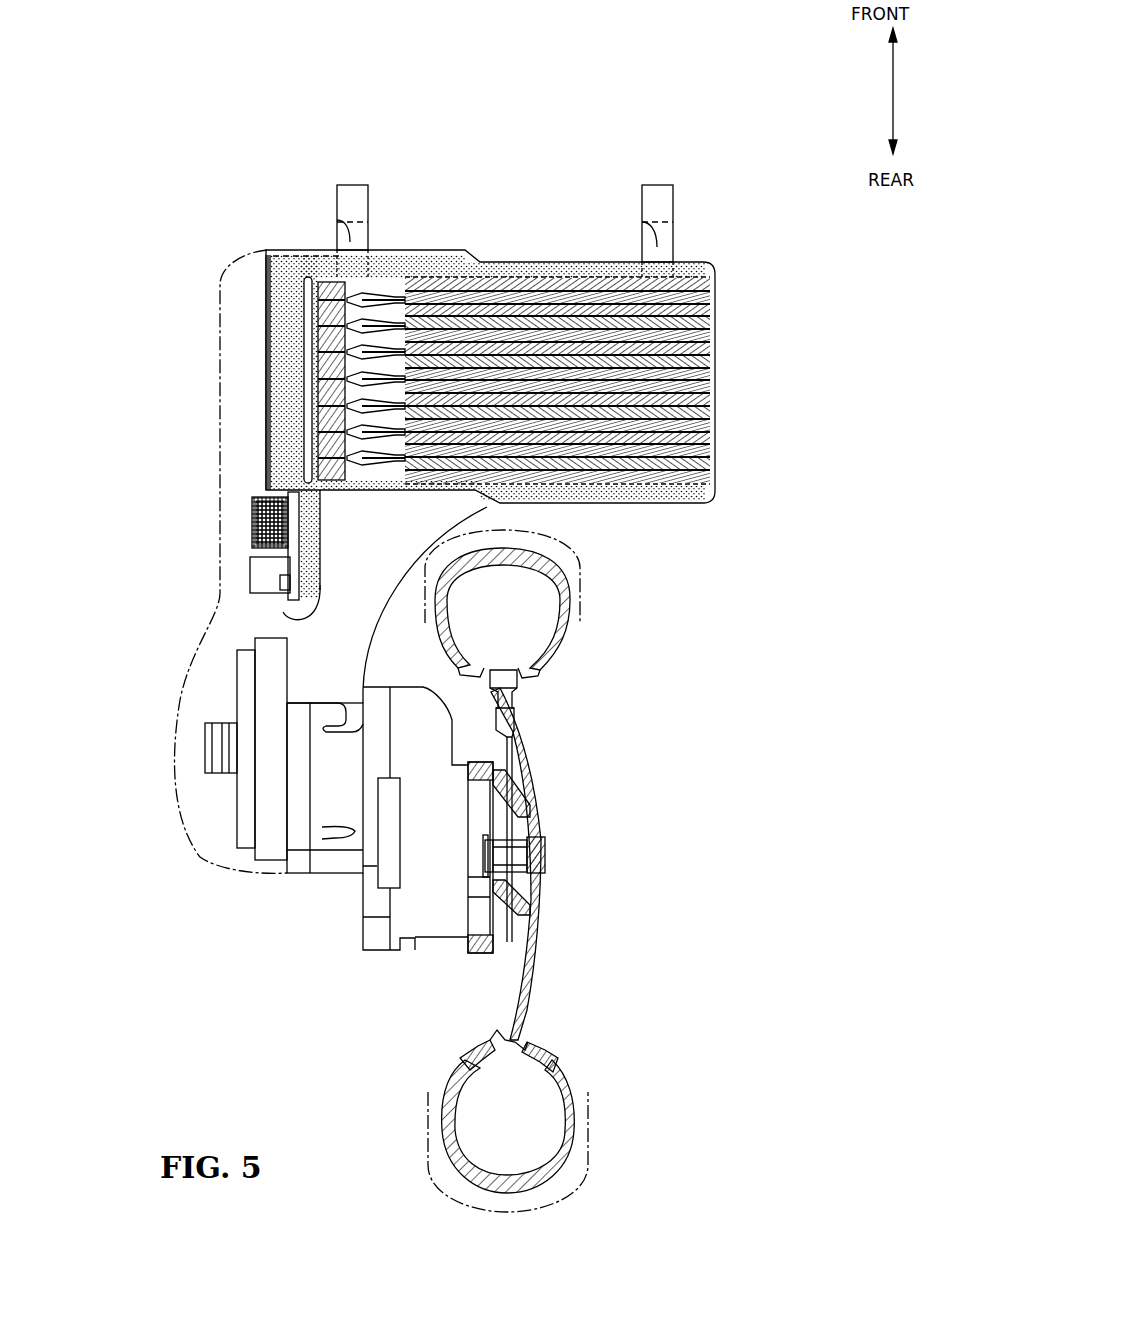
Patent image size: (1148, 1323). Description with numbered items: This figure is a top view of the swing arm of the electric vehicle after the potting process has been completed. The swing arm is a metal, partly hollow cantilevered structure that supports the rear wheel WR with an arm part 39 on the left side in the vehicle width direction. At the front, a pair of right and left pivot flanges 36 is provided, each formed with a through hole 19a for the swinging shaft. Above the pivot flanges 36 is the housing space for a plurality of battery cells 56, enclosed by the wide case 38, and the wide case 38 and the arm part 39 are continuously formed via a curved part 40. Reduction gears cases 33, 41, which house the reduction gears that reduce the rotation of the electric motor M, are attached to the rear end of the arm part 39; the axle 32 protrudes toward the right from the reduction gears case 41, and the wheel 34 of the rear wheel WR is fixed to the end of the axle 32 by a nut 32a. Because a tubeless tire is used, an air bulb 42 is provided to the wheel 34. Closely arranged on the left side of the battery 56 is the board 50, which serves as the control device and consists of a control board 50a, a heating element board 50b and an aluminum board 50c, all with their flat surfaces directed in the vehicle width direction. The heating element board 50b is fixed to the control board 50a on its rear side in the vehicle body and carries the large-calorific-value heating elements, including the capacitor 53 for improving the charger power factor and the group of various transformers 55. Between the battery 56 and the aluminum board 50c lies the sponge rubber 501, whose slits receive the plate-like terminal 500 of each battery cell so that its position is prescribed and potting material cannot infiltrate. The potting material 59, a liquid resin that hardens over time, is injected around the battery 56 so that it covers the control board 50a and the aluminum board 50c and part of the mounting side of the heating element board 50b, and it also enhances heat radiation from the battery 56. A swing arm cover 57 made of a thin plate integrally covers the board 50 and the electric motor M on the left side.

The wide case 38 is at (513, 262).
The pivot flange 36 is at (337, 192).
The through hole 19a is at (337, 242).
The battery cells 56 is at (706, 400).
The board 50 is at (258, 433).
The control board 50a is at (268, 345).
The aluminum board 50c is at (268, 372).
The potting material 59 is at (300, 300).
The sponge rubber 501 is at (306, 312).
The plate-like terminal 500 is at (335, 330).
The heating element board 50b is at (283, 619).
The capacitor 53 is at (252, 505).
The group of various transformers 55 is at (252, 576).
The swing arm cover 57 is at (176, 792).
The electric motor M is at (217, 823).
The arm part 39 is at (320, 648).
The reduction gears case 33 is at (365, 905).
The reduction gears case 41 is at (420, 940).
The curved part 40 is at (390, 586).
The air bulb 42 is at (523, 707).
The wheel 34 is at (540, 788).
The nut 32a is at (545, 857).
The axle 32 is at (527, 902).
The rear wheel WR is at (557, 1167).